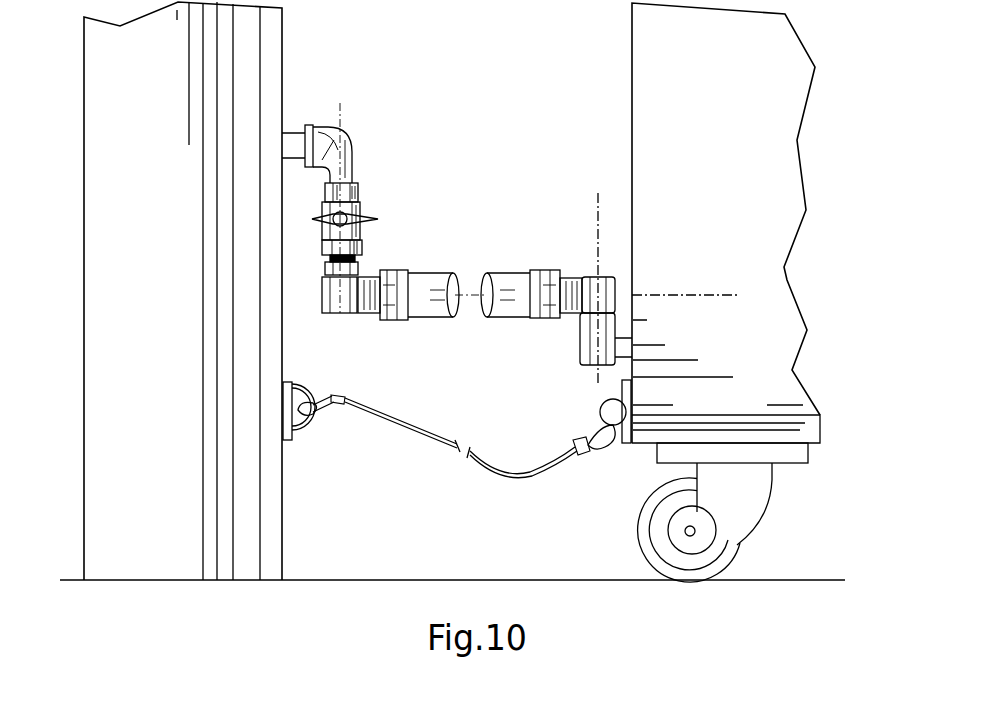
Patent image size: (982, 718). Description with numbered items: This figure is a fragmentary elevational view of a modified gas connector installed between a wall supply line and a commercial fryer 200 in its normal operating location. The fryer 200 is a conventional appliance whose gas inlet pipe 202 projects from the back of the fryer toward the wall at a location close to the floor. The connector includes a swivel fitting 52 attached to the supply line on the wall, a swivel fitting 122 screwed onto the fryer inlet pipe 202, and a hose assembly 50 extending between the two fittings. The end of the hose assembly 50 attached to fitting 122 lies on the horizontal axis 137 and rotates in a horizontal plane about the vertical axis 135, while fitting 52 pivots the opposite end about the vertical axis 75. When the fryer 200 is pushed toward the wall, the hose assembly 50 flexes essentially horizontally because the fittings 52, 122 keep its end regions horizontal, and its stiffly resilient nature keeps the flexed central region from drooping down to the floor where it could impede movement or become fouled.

The hose assembly 50 is at (428, 270).
The swivel fitting 52 is at (340, 314).
The vertical axis 75 is at (320, 413).
The swivel fitting 122 is at (580, 338).
The vertical axis 135 is at (598, 200).
The axis 137 is at (718, 295).
The commercial fryer 200 is at (633, 140).
The gas inlet pipe 202 is at (620, 350).